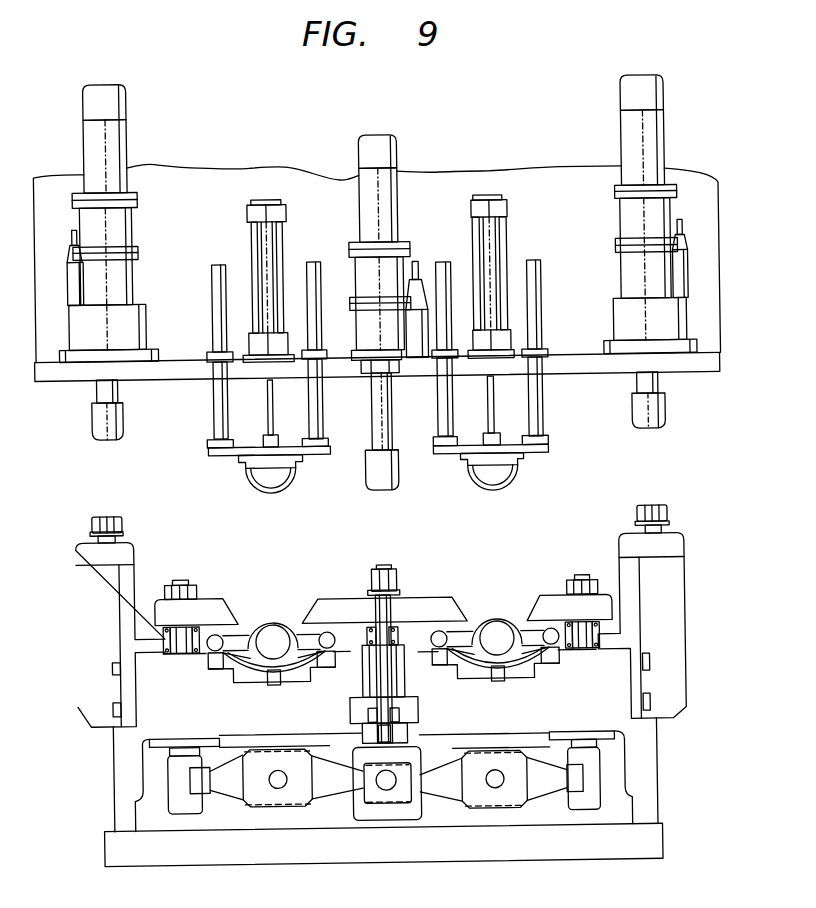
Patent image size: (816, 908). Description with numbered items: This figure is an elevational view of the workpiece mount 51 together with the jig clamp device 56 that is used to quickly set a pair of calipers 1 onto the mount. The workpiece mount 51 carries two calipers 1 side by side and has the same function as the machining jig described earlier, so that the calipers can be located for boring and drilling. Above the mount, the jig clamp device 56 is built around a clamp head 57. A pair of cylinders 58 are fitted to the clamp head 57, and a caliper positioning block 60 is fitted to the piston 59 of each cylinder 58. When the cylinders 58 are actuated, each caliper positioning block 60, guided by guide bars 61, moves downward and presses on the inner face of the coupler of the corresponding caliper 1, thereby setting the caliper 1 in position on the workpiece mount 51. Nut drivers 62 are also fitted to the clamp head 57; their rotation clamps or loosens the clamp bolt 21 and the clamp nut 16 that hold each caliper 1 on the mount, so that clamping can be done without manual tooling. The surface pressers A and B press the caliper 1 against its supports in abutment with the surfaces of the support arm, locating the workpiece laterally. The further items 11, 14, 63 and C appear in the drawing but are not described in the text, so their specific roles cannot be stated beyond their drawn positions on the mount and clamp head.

The caliper 1 is at (271, 616).
The nut / spring bolt assembly 11 is at (184, 580).
The clamping jaw 14 is at (207, 597).
The clamp nut 16 is at (371, 583).
The clamp bolt 21 is at (122, 521).
The workpiece mount 51 is at (655, 784).
The jig clamp device 56 is at (497, 169).
The clamp head 57 is at (599, 378).
The cylinder 58 is at (275, 260).
The piston 59 is at (268, 393).
The caliper positioning block 60 is at (292, 490).
The guide bar 61 is at (214, 402).
The nut driver 62 is at (150, 318).
The fastening bolt 63 is at (92, 415).
The surface presser A is at (240, 630).
The surface presser B is at (303, 630).
The position C is at (267, 681).